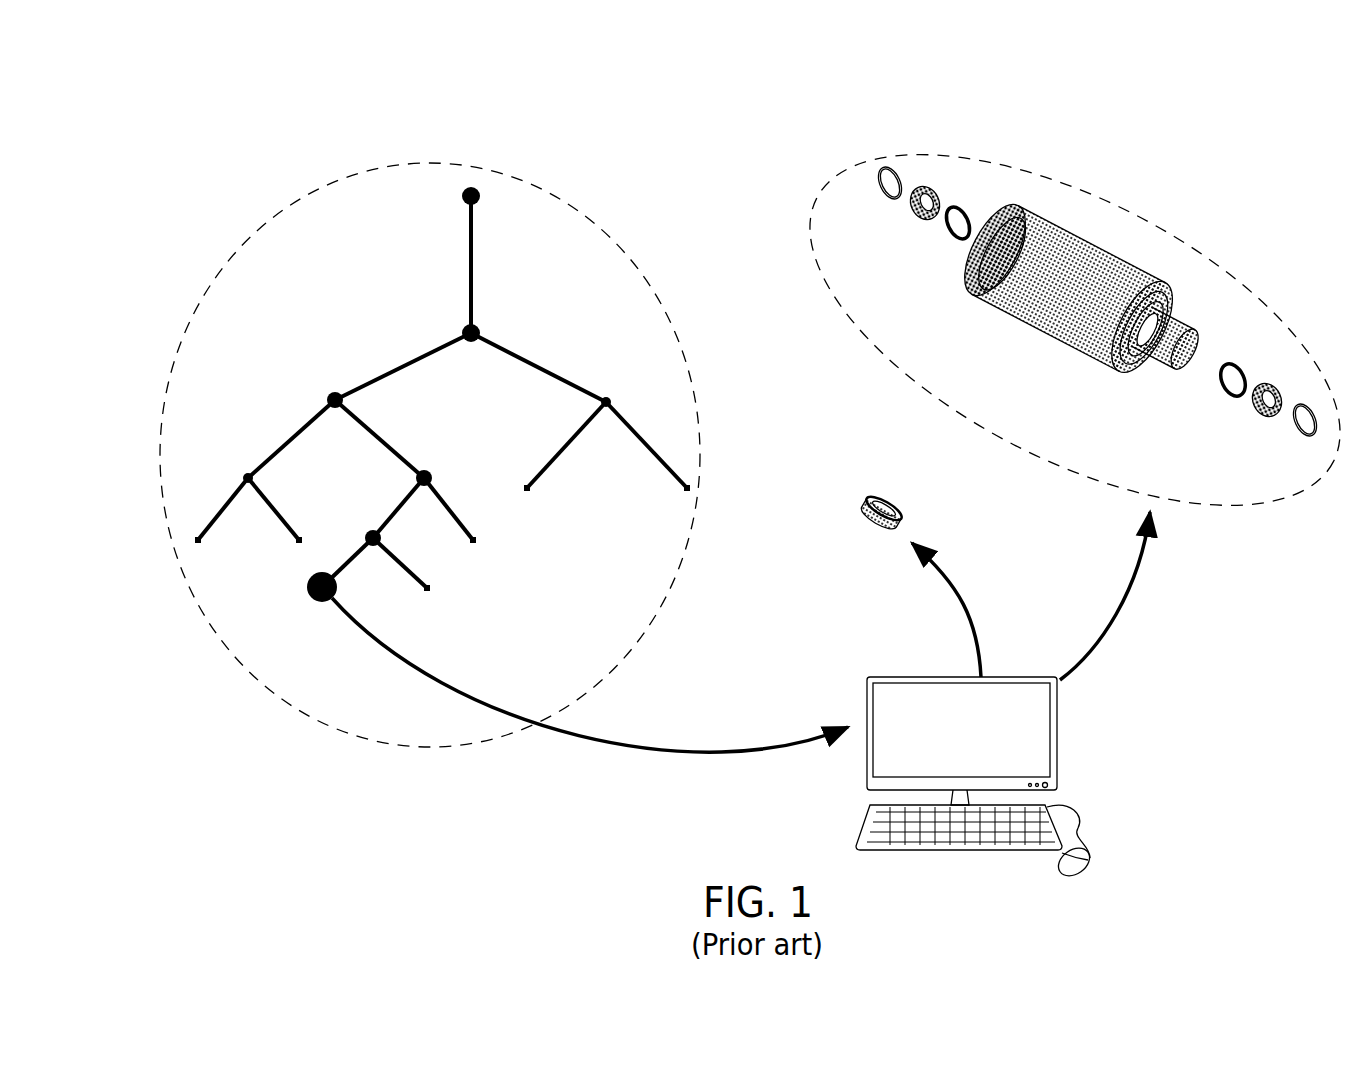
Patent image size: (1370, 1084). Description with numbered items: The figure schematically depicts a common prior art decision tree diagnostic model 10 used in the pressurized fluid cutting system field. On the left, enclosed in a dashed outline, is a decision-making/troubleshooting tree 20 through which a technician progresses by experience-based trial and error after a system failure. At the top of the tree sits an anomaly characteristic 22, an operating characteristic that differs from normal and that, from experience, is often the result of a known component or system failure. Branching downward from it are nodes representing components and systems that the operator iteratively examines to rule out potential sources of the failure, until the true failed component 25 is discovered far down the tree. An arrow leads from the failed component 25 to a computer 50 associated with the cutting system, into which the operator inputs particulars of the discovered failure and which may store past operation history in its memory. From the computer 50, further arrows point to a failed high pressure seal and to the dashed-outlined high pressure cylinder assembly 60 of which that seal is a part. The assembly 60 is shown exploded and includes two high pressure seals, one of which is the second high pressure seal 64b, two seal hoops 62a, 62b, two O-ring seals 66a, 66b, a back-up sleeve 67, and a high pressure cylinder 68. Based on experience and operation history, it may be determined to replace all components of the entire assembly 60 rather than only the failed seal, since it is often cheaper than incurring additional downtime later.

The decision tree diagnostic model 10 is at (591, 127).
The decision tree 20 is at (266, 225).
The anomaly characteristic 22 is at (467, 200).
The failed component 25 is at (322, 602).
The computer 50 is at (1058, 713).
The high pressure cylinder assembly 60 is at (1100, 203).
The seal hoop 62a is at (1290, 436).
The seal hoop 62b is at (882, 200).
The high pressure seal 64b is at (912, 220).
The O-ring seal 66a is at (1215, 391).
The O-ring seal 66b is at (945, 242).
The back-up sleeve 67 is at (1152, 352).
The high pressure cylinder 68 is at (1045, 293).